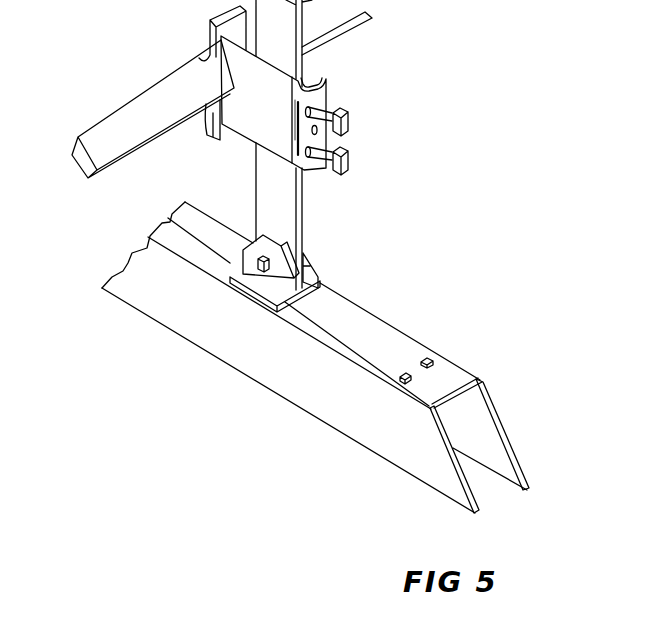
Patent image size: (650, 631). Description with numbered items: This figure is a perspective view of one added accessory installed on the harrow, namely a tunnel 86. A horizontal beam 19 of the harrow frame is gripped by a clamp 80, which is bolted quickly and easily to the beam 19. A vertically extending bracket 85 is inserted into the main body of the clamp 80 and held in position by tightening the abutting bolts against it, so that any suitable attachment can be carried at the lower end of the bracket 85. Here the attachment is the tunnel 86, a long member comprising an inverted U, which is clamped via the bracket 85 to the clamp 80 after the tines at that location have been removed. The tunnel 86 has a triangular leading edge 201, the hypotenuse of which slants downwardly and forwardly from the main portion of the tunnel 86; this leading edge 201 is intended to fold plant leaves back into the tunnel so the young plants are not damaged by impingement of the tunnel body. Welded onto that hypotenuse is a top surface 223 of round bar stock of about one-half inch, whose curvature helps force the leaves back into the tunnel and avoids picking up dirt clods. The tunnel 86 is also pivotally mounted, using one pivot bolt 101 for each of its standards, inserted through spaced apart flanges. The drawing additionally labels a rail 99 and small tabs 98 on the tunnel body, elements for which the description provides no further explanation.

The beam 19 is at (369, 10).
The clamp 80 is at (332, 97).
The pivot bolt 101 is at (268, 260).
The channel rail 99 is at (315, 305).
The vertically extending bracket 85 is at (233, 345).
The retaining tabs 98 is at (427, 358).
The top surface 223 is at (495, 410).
The triangular leading edge 201 is at (438, 455).
The tunnel 86 is at (450, 473).